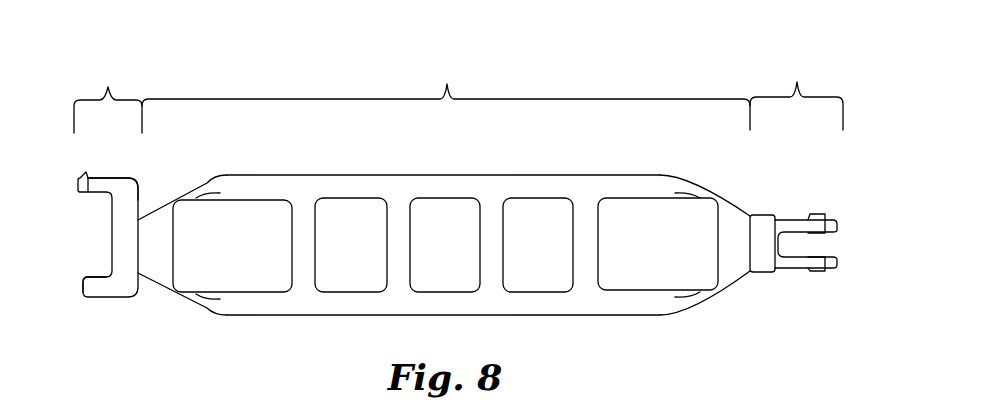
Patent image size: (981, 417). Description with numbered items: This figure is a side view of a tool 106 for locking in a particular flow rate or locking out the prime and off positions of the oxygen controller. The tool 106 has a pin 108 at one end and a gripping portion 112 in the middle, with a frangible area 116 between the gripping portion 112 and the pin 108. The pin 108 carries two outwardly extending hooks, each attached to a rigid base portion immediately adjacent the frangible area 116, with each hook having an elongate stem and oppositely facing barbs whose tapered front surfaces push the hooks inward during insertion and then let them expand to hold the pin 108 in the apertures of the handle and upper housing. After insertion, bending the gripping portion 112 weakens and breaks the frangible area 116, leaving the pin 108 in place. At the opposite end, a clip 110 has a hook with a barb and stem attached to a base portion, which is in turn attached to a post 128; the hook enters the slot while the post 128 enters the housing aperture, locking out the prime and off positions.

The tool 106 is at (626, 72).
The pin 108 is at (796, 92).
The clip 110 is at (108, 97).
The gripping portion 112 is at (446, 81).
The frangible area 116 is at (148, 287).
The post 128 is at (93, 296).